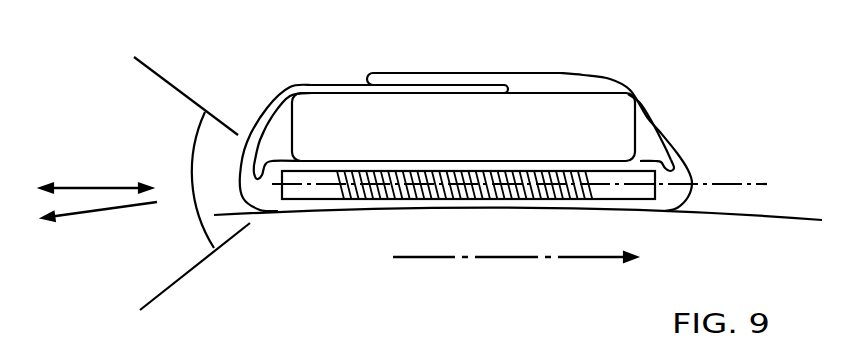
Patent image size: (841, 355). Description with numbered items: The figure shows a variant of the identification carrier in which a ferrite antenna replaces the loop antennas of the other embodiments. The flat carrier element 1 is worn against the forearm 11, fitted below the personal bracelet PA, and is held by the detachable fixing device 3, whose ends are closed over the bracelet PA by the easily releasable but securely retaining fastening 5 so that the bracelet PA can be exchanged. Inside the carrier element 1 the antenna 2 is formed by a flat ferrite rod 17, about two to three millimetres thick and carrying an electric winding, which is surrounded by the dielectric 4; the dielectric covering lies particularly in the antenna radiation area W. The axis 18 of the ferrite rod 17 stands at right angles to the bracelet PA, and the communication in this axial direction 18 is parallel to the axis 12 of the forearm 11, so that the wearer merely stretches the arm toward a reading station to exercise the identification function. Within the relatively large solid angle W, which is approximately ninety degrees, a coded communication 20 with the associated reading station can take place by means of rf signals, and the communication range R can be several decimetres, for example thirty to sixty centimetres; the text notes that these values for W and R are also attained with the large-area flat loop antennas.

The carrier element 1 is at (508, 143).
The antenna 2 is at (298, 200).
The fixing device 3 is at (610, 79).
The dielectric 4 is at (268, 200).
The fastening 5 is at (455, 83).
The arm 11 is at (792, 217).
The axis of the forearm 12 is at (508, 259).
The flat ferrite rod 17 is at (332, 193).
The axis of the ferrite rod 18 is at (743, 182).
The coded communication 20 is at (90, 186).
The personal bracelet PA is at (338, 112).
The antenna radiation area / solid angle W is at (192, 142).
The communication range R is at (88, 213).